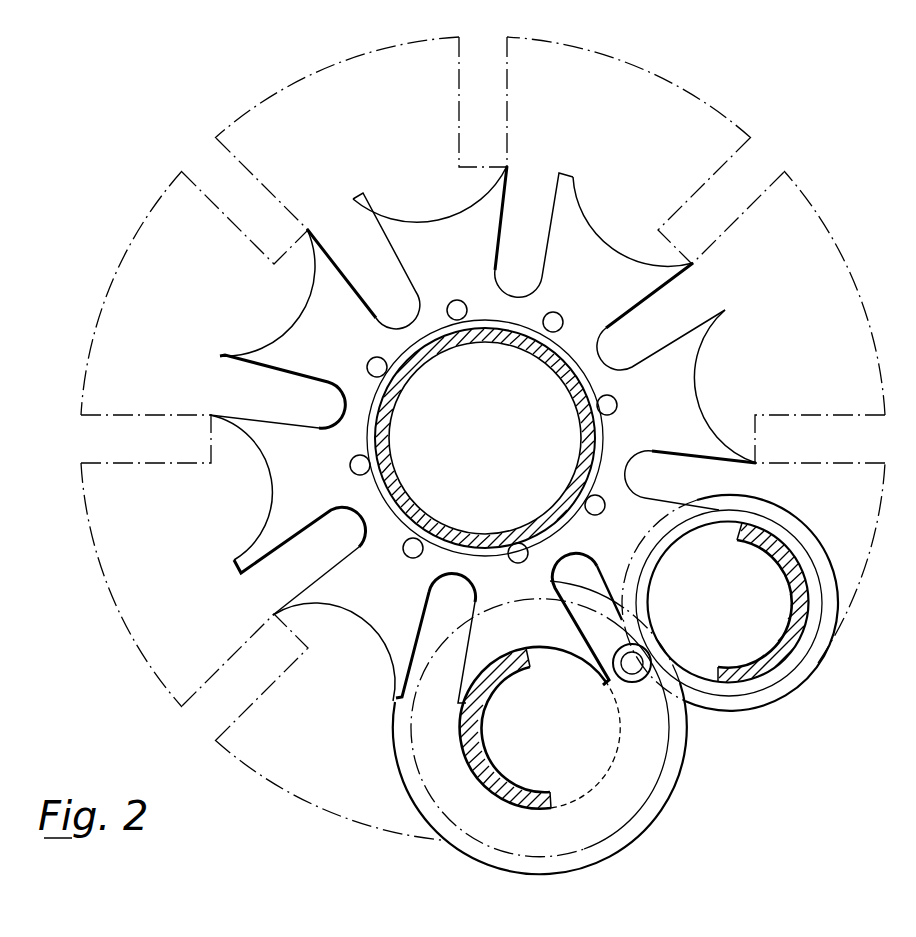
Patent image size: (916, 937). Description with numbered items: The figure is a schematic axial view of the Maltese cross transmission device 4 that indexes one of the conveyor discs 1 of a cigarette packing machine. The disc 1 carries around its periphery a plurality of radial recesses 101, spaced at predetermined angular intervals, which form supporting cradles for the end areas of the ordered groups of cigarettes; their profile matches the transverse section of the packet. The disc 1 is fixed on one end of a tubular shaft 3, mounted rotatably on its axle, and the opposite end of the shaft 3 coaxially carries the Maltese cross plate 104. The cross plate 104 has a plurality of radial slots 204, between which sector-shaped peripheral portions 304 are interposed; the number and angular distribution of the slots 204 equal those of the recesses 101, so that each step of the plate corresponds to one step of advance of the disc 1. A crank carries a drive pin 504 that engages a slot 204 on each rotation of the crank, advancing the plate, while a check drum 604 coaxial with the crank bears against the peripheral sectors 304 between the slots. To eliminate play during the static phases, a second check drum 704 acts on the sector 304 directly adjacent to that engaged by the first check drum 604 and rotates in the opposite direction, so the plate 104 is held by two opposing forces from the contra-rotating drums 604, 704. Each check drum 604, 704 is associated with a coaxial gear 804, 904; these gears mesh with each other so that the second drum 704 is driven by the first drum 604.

The disc 1 is at (836, 230).
The radial recess 101 is at (735, 157).
The tubular shaft 3 is at (579, 400).
The Maltese cross transmission device 4 is at (389, 650).
The Maltese cross plate 104 is at (373, 602).
The radial slot 204 is at (273, 555).
The peripheral portion (sector) 304 is at (268, 481).
The drive pin 504 is at (611, 653).
The check drum 604 is at (499, 794).
The second check drum 704 is at (743, 658).
The gear 804 is at (658, 783).
The gear 904 is at (806, 662).